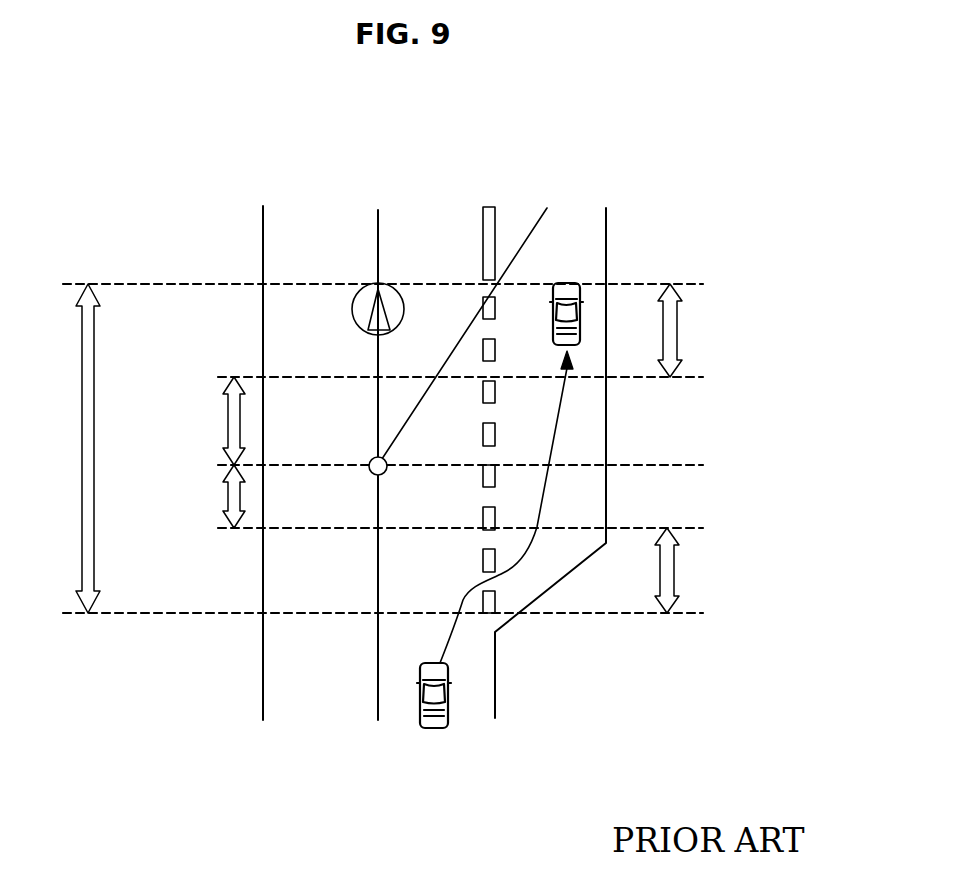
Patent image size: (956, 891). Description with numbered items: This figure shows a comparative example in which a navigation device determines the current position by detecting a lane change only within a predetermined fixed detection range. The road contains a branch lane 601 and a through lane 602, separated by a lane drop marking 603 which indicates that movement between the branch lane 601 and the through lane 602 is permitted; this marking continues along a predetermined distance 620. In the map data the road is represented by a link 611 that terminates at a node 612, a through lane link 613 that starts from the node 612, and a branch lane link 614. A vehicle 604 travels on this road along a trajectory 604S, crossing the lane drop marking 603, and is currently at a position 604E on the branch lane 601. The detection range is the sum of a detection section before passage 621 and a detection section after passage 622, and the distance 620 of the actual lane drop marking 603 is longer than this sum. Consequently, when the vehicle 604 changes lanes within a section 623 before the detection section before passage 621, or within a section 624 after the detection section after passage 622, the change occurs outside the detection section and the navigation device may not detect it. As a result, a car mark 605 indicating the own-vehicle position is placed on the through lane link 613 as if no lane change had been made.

The branch lane 601 is at (600, 247).
The through lane 602 is at (308, 227).
The lane drop marking 603 is at (490, 388).
The vehicle 604 is at (421, 706).
The position 604E is at (582, 290).
The trajectory 604S is at (558, 435).
The car mark 605 is at (357, 313).
The link 611 is at (378, 642).
The node 612 is at (370, 478).
The through lane link 613 is at (377, 385).
The branch lane link 614 is at (535, 223).
The distance 620 is at (90, 388).
The detection section before passage 621 is at (232, 483).
The detection section after passage 622 is at (232, 413).
The section 623 is at (673, 580).
The section 624 is at (675, 342).